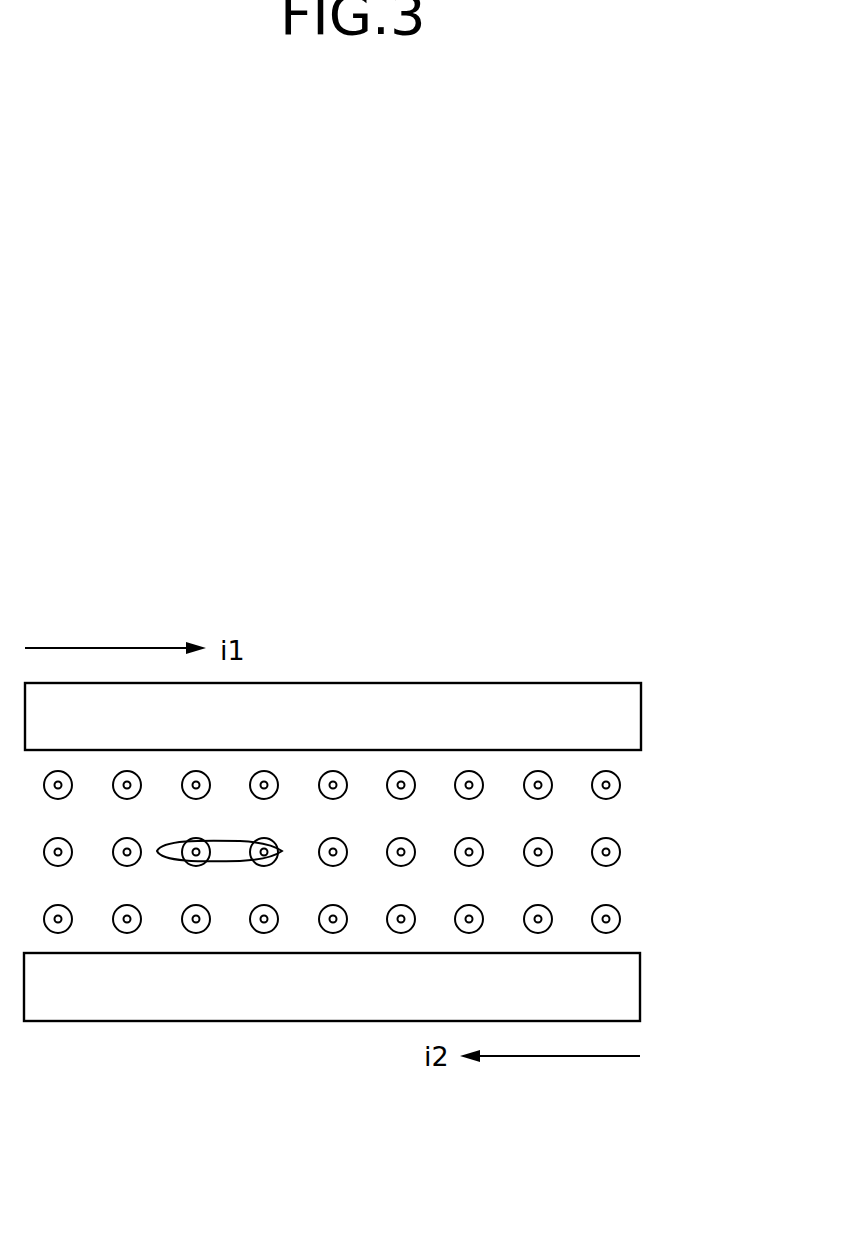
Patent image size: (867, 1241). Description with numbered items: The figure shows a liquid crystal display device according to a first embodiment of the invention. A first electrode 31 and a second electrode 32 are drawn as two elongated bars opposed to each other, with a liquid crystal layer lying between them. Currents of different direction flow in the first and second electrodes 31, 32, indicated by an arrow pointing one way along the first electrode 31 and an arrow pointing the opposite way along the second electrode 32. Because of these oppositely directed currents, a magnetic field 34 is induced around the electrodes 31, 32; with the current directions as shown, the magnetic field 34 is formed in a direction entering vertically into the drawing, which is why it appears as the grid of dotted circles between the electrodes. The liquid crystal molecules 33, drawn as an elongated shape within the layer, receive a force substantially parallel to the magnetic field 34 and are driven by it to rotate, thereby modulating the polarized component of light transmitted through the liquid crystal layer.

The first electrode 31 is at (641, 716).
The second electrode 32 is at (640, 985).
The liquid crystal molecules 33 is at (204, 842).
The magnetic field 34 is at (620, 852).